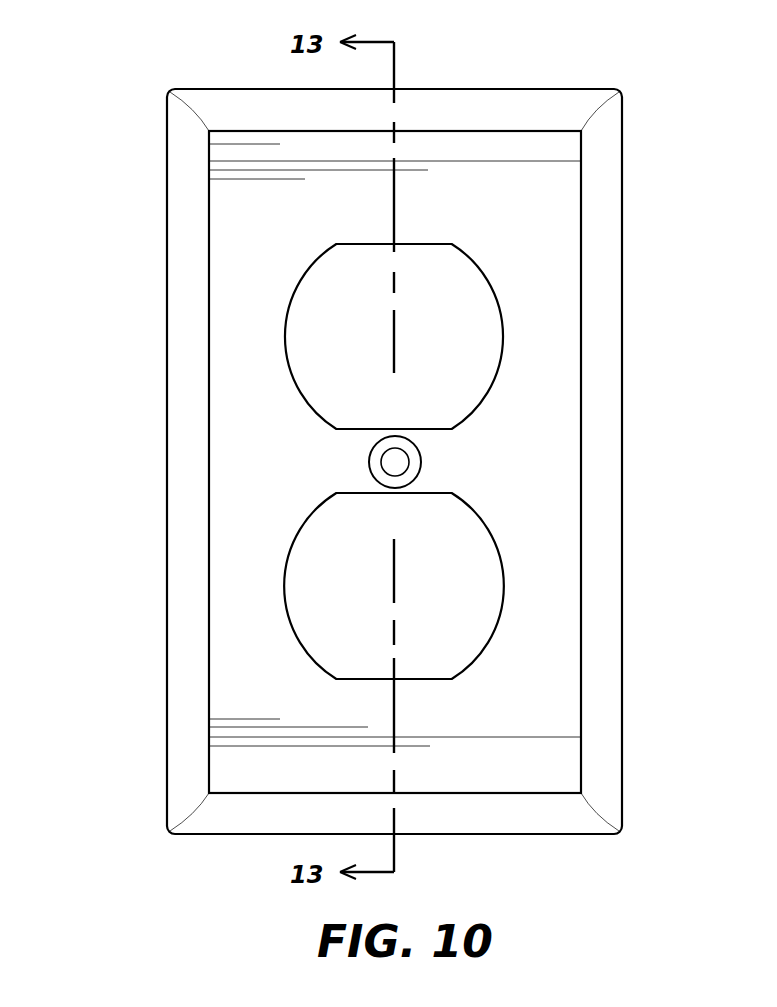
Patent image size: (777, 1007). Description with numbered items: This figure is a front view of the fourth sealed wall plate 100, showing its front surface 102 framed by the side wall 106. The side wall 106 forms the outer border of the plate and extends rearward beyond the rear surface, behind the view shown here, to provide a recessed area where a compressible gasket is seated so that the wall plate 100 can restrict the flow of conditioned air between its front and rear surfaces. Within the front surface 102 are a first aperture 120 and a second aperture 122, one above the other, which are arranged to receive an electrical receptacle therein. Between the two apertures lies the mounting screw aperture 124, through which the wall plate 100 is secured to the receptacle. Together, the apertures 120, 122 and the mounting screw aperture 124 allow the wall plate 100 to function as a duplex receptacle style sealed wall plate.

The fourth sealed wall plate 100 is at (132, 72).
The front surface 102 is at (529, 207).
The side wall 106 is at (488, 105).
The first aperture 120 is at (451, 342).
The second aperture 122 is at (461, 592).
The mounting screw aperture 124 is at (408, 463).